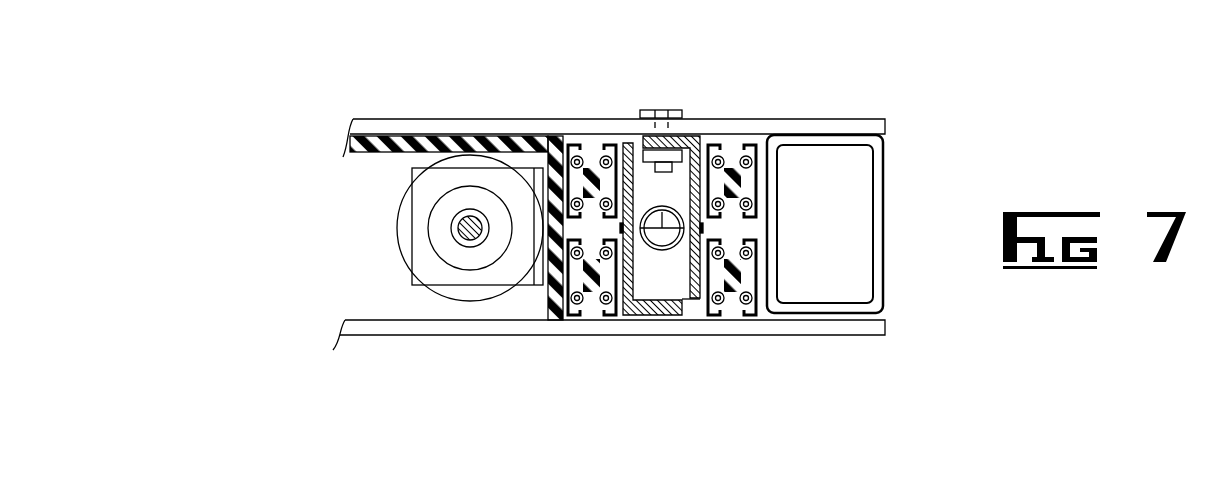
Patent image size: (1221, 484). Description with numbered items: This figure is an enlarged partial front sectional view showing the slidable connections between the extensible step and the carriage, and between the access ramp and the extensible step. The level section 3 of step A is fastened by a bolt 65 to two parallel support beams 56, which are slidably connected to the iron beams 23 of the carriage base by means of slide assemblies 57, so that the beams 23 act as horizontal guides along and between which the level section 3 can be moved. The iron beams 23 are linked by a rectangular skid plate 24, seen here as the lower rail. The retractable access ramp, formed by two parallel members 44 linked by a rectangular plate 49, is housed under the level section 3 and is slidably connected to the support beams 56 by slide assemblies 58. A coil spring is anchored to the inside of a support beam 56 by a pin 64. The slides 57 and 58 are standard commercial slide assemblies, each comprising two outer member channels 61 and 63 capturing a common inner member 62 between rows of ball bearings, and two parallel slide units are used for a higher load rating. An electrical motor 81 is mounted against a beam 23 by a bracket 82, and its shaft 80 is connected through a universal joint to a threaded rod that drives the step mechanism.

The level section 3 is at (492, 118).
The iron beam 23 is at (882, 203).
The skid plate 24 is at (885, 327).
The parallel member 44 is at (560, 314).
The rectangular plate 49 is at (404, 147).
The support beam 56 is at (648, 315).
The slide assembly 57 is at (742, 217).
The slide assembly 58 is at (579, 145).
The outer member channel 61 is at (755, 143).
The inner member 62 is at (733, 165).
The outer member channel 63 is at (712, 143).
The pin 64 is at (665, 210).
The bolt 65 is at (663, 108).
The shaft 80 is at (458, 229).
The electrical motor 81 is at (406, 252).
The bracket 82 is at (425, 178).